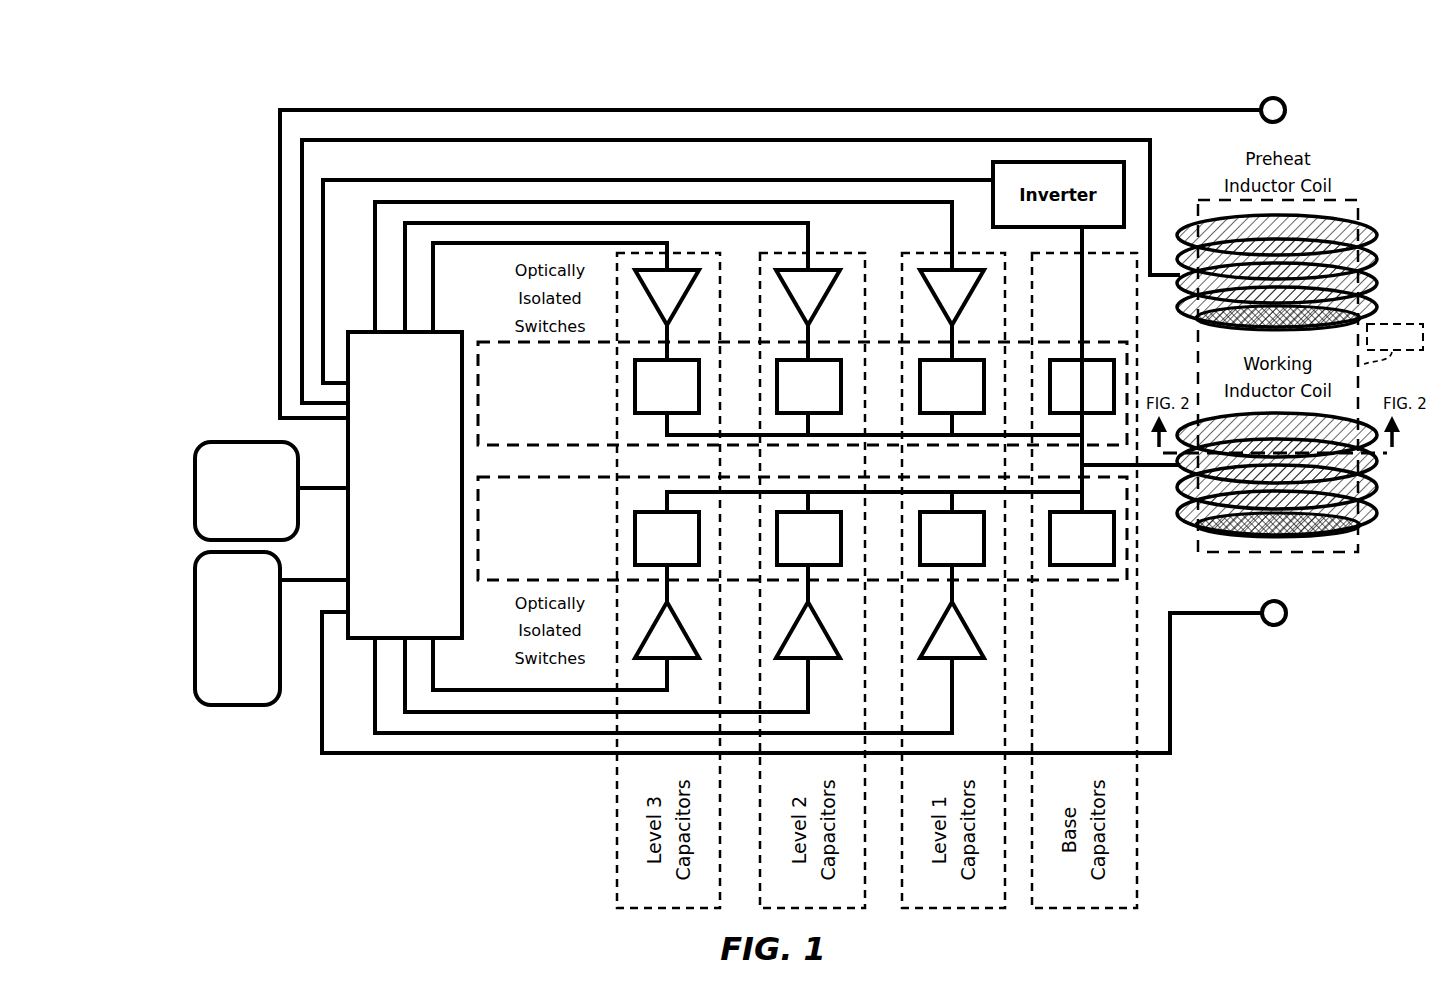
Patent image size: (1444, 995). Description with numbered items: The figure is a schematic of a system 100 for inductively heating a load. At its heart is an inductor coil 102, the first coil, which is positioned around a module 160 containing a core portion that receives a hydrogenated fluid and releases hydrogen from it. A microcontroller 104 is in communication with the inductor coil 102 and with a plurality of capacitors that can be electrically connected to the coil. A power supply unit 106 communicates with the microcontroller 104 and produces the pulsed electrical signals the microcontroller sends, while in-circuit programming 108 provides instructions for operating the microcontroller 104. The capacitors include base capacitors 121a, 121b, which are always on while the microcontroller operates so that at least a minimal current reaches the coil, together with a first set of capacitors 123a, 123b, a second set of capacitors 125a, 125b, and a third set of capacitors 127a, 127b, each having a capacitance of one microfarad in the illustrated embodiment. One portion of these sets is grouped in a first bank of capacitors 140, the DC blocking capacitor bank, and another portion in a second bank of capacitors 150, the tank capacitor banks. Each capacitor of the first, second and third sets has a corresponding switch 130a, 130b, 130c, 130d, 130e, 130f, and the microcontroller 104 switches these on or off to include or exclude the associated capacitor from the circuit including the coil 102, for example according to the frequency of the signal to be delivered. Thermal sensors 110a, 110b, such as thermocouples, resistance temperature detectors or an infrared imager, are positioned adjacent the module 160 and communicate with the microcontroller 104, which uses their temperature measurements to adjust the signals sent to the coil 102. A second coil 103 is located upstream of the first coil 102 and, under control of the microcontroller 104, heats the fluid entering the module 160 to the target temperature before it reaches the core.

The system 100 is at (250, 111).
The inductor coil 102 is at (1345, 418).
The second coil 103 is at (1347, 215).
The microcontroller 104 is at (363, 330).
The power supply unit 106 is at (195, 473).
The in-circuit programming 108 is at (195, 617).
The thermal sensor 110a is at (1287, 613).
The thermal sensor 110b is at (1286, 110).
The base capacitor 121a is at (1082, 538).
The base capacitor 121b is at (1082, 386).
The first set capacitor 123a is at (952, 538).
The first set capacitor 123b is at (952, 386).
The second set capacitor 125a is at (809, 538).
The second set capacitor 125b is at (809, 386).
The third set capacitor 127a is at (667, 538).
The third set capacitor 127b is at (667, 386).
The switch 130a is at (938, 267).
The switch 130b is at (943, 660).
The switch 130c is at (830, 269).
The switch 130d is at (822, 660).
The switch 130e is at (690, 269).
The switch 130f is at (680, 660).
The first bank of capacitors 140 is at (485, 341).
The second bank of capacitors 150 is at (497, 581).
The module 160 is at (1393, 344).